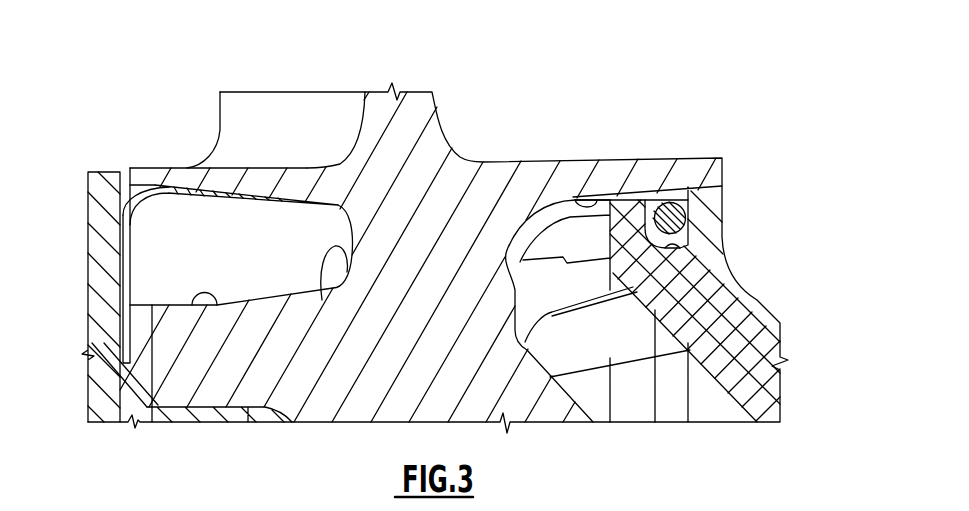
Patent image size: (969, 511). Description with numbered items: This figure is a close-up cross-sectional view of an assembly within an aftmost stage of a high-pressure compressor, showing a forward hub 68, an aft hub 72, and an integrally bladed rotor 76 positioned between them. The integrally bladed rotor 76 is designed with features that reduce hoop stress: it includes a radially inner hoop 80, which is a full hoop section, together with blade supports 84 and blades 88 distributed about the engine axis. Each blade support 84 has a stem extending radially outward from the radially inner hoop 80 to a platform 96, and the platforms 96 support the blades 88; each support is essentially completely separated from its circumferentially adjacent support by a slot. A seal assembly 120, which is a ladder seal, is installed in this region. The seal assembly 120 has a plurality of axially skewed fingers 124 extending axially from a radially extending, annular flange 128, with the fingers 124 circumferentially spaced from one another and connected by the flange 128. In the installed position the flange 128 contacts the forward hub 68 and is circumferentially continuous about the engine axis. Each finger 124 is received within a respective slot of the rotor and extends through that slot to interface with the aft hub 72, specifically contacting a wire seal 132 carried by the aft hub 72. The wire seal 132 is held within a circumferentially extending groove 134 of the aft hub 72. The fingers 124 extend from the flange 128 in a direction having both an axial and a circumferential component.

The forward hub 68 is at (97, 172).
The aft hub 72 is at (720, 292).
The integrally bladed rotor 76 is at (420, 105).
The radially inner hoop 80 is at (193, 297).
The blade supports 84 is at (320, 294).
The blades 88 is at (273, 115).
The platform 96 is at (175, 180).
The seal assembly 120 is at (150, 418).
The fingers 124 is at (573, 197).
The flange 128 is at (110, 360).
The wire seal 132 is at (676, 218).
The groove 134 is at (674, 245).